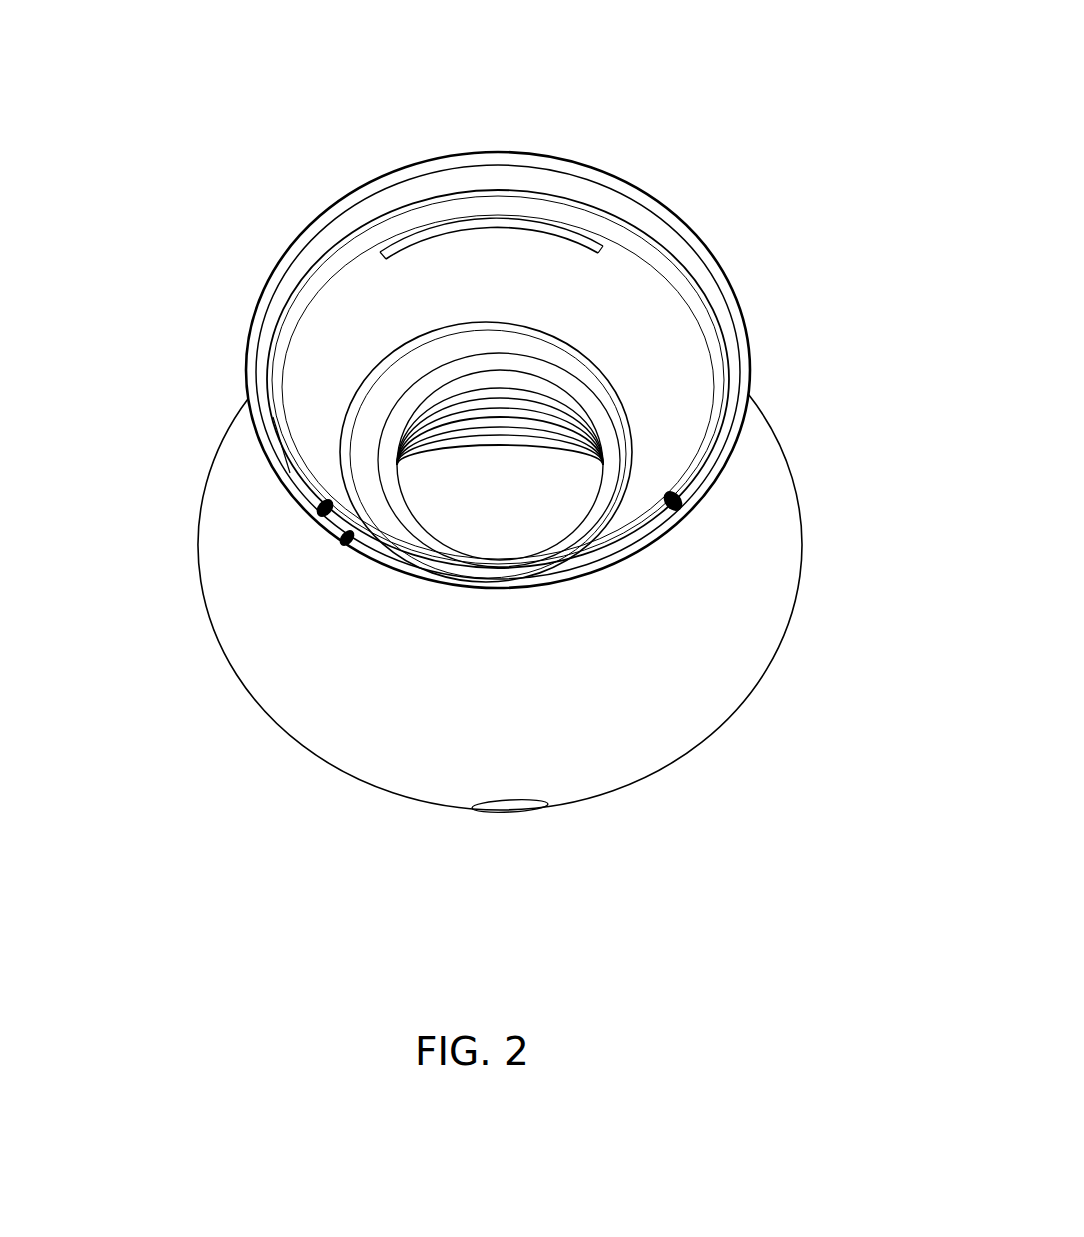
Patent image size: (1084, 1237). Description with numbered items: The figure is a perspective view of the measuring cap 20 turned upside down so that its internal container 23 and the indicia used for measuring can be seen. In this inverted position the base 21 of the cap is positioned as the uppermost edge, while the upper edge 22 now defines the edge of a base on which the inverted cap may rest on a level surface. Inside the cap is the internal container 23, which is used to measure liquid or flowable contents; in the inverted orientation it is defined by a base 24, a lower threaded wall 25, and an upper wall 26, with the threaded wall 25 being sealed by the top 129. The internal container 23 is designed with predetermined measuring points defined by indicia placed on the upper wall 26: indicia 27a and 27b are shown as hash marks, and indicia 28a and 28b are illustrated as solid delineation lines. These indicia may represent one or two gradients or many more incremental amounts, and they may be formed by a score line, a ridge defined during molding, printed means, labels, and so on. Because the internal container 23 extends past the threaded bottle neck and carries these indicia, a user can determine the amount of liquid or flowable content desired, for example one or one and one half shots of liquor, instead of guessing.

The measuring cap 20 is at (798, 377).
The base 21 is at (253, 407).
The upper edge 22 is at (802, 520).
The internal container 23 is at (602, 288).
The base 24 is at (387, 797).
The lower threaded wall 25 is at (523, 418).
The upper wall 26 is at (353, 280).
The indicia 27a is at (447, 263).
The indicia 27b is at (497, 218).
The indicia 28a is at (690, 346).
The indicia 28b is at (680, 258).
The top 129 is at (500, 521).